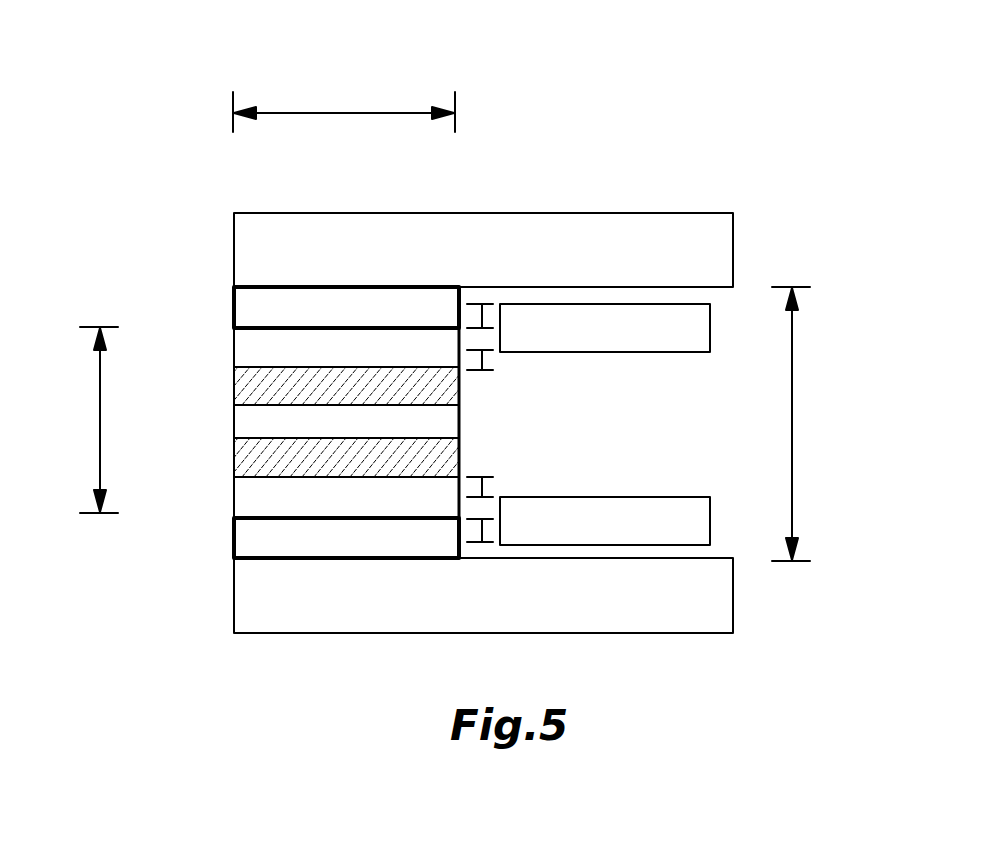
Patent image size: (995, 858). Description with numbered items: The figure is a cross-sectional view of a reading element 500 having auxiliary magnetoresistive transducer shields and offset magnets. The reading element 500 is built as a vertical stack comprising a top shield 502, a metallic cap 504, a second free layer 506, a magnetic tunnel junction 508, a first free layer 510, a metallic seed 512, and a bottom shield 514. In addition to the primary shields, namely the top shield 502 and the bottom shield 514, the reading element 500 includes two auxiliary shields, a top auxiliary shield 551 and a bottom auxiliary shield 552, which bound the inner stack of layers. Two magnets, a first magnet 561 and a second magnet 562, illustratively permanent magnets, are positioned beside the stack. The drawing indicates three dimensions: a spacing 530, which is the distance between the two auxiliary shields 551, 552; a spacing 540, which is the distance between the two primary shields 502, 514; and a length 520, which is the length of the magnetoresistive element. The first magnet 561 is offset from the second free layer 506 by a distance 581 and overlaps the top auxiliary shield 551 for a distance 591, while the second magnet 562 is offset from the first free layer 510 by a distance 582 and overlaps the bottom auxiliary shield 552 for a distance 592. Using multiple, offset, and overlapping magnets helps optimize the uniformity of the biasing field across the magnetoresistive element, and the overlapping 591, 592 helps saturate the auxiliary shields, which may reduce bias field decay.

The reading element 500 is at (683, 101).
The top shield 502 is at (316, 235).
The metallic cap 504 is at (250, 352).
The second free layer 506 is at (243, 382).
The magnetic tunnel junction 508 is at (242, 426).
The first free layer 510 is at (258, 457).
The metallic seed 512 is at (268, 494).
The bottom shield 514 is at (262, 619).
The length 520 is at (278, 112).
The spacing 530 is at (98, 450).
The spacing 540 is at (793, 468).
The top auxiliary shield 551 is at (248, 305).
The bottom auxiliary shield 552 is at (260, 539).
The first magnet 561 is at (700, 317).
The second magnet 562 is at (690, 527).
The distance 581 is at (482, 353).
The distance 582 is at (487, 484).
The distance 591 is at (500, 306).
The distance 592 is at (487, 528).